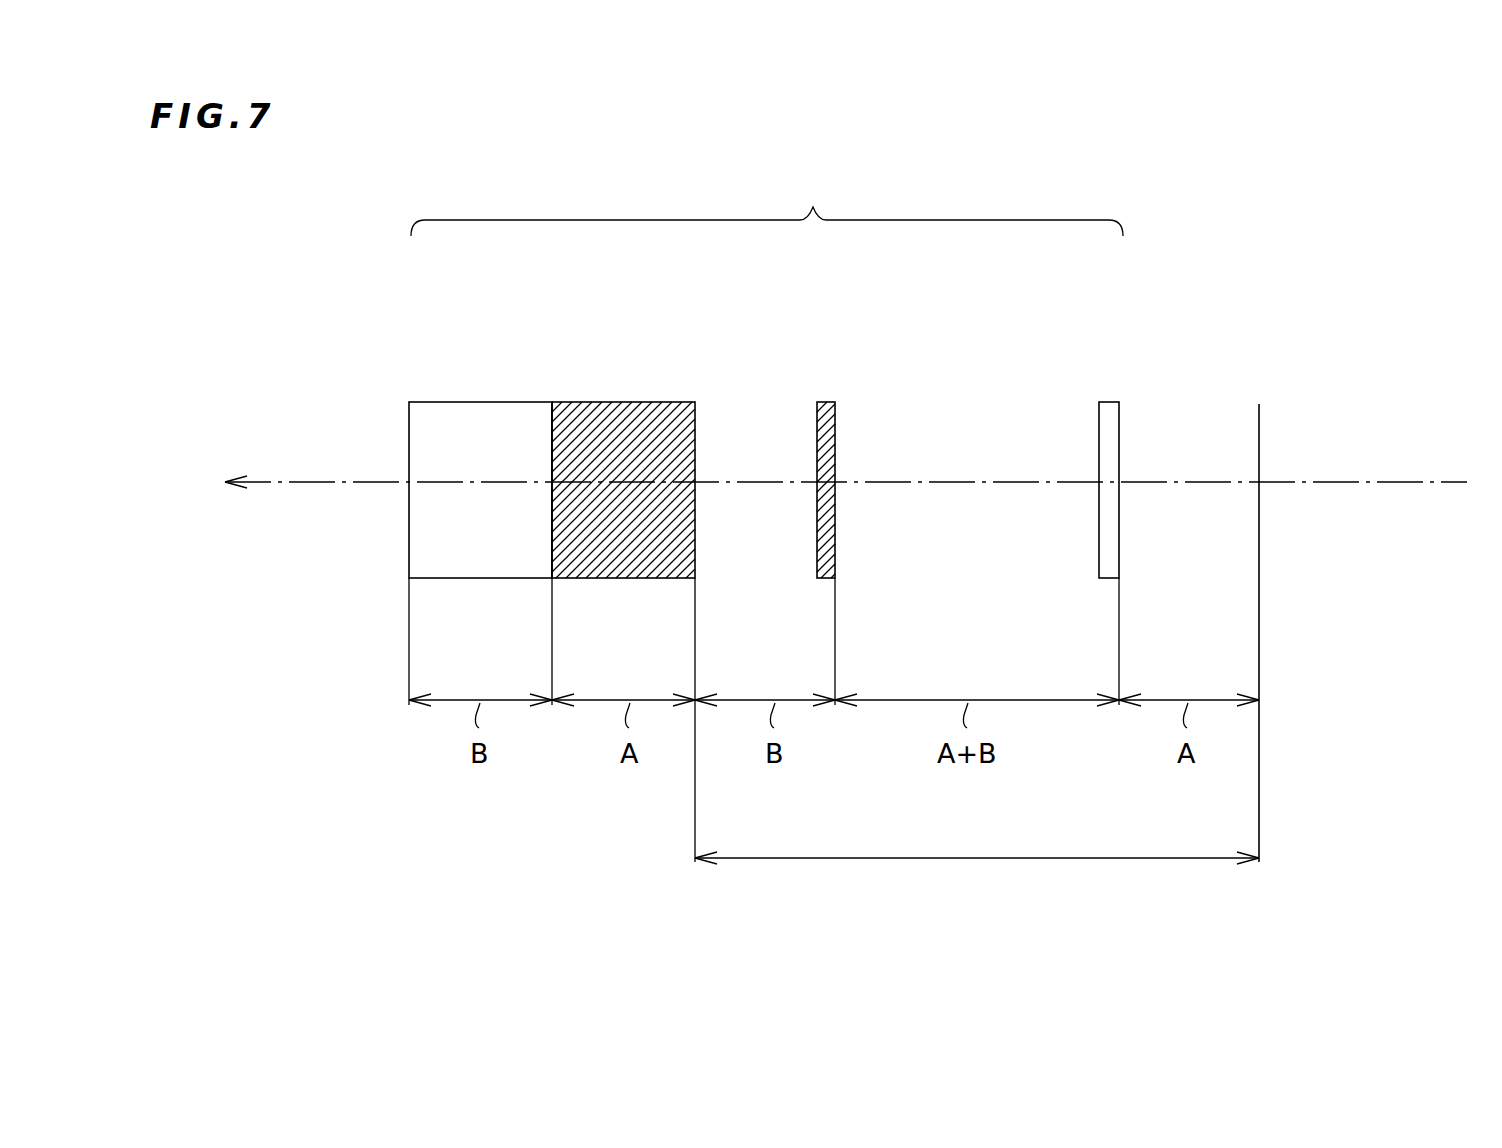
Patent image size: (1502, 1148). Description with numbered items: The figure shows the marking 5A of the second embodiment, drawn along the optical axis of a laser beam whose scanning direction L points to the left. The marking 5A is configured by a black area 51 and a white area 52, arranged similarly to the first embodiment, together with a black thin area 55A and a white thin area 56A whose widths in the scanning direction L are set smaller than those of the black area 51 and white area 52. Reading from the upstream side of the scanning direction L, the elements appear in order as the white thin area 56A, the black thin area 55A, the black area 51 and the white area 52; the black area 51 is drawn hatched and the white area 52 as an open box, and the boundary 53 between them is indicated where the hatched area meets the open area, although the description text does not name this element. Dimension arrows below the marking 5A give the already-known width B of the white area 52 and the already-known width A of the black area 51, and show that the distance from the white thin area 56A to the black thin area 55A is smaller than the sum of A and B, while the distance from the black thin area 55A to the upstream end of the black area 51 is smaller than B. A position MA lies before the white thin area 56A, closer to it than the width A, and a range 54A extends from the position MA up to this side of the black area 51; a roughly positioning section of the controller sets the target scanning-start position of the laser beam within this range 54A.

The marking 5A is at (767, 204).
The black area 51 is at (634, 401).
The white area 52 is at (455, 401).
The cemented surface 53 is at (552, 445).
The black thin area 55A is at (824, 401).
The white thin area 56A is at (1110, 401).
The range 54A is at (967, 861).
The position MA is at (1260, 425).
The scanning direction L is at (1452, 483).